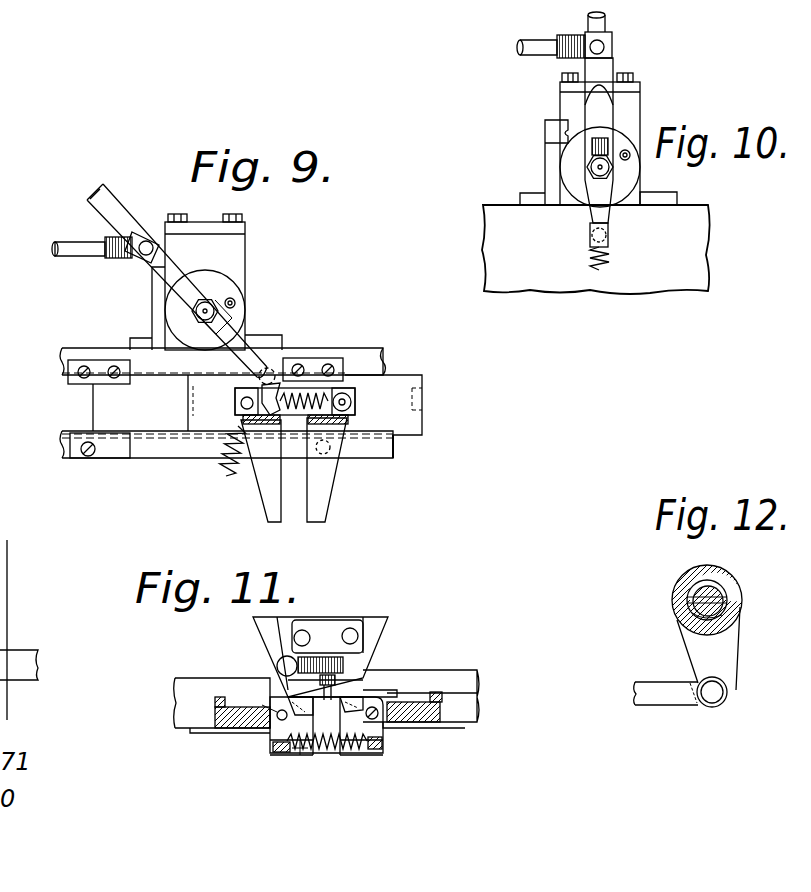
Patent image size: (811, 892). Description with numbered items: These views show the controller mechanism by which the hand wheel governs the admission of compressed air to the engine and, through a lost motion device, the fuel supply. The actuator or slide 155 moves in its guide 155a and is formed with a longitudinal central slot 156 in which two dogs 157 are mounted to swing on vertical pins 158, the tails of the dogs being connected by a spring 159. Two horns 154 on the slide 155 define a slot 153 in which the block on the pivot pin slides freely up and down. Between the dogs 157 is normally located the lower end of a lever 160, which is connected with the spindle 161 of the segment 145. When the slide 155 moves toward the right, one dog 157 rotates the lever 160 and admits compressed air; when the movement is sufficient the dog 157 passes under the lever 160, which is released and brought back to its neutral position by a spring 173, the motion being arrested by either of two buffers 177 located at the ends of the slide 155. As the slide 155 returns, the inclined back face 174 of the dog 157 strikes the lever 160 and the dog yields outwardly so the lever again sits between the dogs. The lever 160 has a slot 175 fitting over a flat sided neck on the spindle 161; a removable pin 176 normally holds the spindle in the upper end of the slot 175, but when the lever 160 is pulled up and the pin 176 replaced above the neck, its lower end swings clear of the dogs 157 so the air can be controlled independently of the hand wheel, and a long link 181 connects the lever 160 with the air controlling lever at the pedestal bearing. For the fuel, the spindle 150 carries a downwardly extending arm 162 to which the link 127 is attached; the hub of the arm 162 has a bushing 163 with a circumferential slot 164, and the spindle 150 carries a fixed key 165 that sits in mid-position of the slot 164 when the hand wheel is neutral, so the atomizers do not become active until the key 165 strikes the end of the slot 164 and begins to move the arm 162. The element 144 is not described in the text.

In FIG. 12, the link 127 is at (660, 695).
In FIG. 10, the bracket 144 is at (548, 135).
In FIG. 11, the bracket 144 is at (300, 618).
In FIG. 11, the segment 145 is at (317, 657).
In FIG. 12, the spindle 150 is at (687, 588).
In FIG. 9, the slot 153 is at (297, 500).
In FIG. 9, the horns 154 is at (270, 480).
In FIG. 11, the horns 154 is at (290, 755).
In FIG. 9, the actuator or slide 155 is at (403, 380).
In FIG. 11, the actuator or slide 155 is at (237, 712).
In FIG. 9, the guide 155a is at (362, 348).
In FIG. 9, the longitudinal central slot 156 is at (353, 420).
In FIG. 11, the longitudinal central slot 156 is at (397, 695).
In FIG. 9, the dogs 157 is at (238, 402).
In FIG. 11, the dogs 157 is at (273, 740).
In FIG. 9, the vertical pins 158 is at (258, 382).
In FIG. 11, the vertical pins 158 is at (280, 710).
In FIG. 9, the spring 159 is at (300, 385).
In FIG. 11, the spring 159 is at (328, 750).
In FIG. 9, the lever 160 is at (165, 280).
In FIG. 10, the lever 160 is at (593, 108).
In FIG. 11, the lever 160 is at (323, 750).
In FIG. 9, the spindle 161 is at (220, 303).
In FIG. 10, the spindle 161 is at (585, 170).
In FIG. 12, the arm 162 is at (705, 657).
In FIG. 12, the bushing 163 is at (682, 617).
In FIG. 12, the circumferential slot 164 is at (727, 587).
In FIG. 12, the fixed key 165 is at (690, 572).
In FIG. 9, the spring 173 is at (242, 463).
In FIG. 10, the spring 173 is at (597, 272).
In FIG. 11, the spring 173 is at (320, 753).
In FIG. 11, the inclined back face 174 is at (262, 630).
In FIG. 9, the slot 175 is at (200, 337).
In FIG. 10, the slot 175 is at (592, 150).
In FIG. 9, the removable pin 176 is at (238, 304).
In FIG. 10, the removable pin 176 is at (628, 152).
In FIG. 9, the buffers 177 is at (193, 403).
In FIG. 11, the buffers 177 is at (217, 697).
In FIG. 9, the long link 181 is at (92, 258).
In FIG. 10, the long link 181 is at (550, 46).